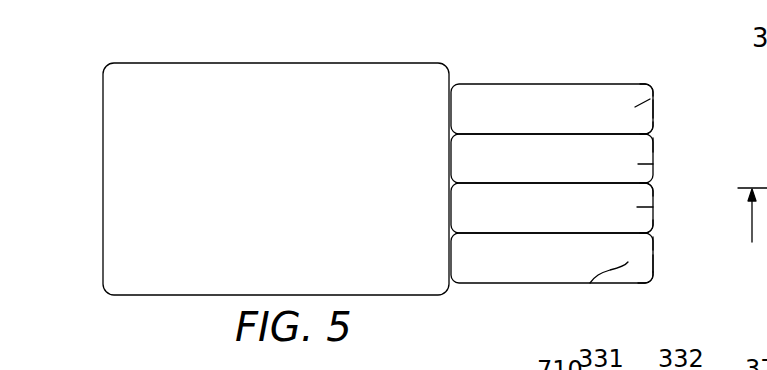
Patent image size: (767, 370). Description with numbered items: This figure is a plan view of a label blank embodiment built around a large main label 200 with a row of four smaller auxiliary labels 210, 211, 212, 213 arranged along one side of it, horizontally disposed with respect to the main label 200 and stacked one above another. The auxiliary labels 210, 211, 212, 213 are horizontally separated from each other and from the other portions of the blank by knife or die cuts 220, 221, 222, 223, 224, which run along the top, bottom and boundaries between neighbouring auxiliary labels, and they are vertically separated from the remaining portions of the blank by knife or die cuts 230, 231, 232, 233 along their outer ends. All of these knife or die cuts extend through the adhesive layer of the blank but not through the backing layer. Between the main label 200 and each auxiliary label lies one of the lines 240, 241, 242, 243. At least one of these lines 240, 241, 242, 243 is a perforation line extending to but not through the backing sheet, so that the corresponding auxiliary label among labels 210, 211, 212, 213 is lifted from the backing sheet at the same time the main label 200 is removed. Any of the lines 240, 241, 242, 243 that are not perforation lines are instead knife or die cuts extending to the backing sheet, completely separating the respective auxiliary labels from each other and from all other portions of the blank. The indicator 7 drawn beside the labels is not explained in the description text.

The main label 200 is at (100, 109).
The line 240 is at (448, 255).
The line 241 is at (448, 205).
The line 242 is at (448, 159).
The line 243 is at (448, 112).
The auxiliary label 210 is at (650, 99).
The auxiliary label 211 is at (653, 164).
The auxiliary label 212 is at (653, 207).
The auxiliary label 213 is at (598, 289).
The knife or die cut 220 is at (657, 134).
The knife or die cut 221 is at (654, 186).
The knife or die cut 222 is at (655, 238).
The knife or die cut 223 is at (653, 284).
The knife or die cut 224 is at (653, 85).
The knife or die cut 230 is at (657, 108).
The knife or die cut 231 is at (656, 144).
The knife or die cut 232 is at (656, 232).
The knife or die cut 233 is at (657, 263).
The direction of view / dimension 7 is at (752, 230).